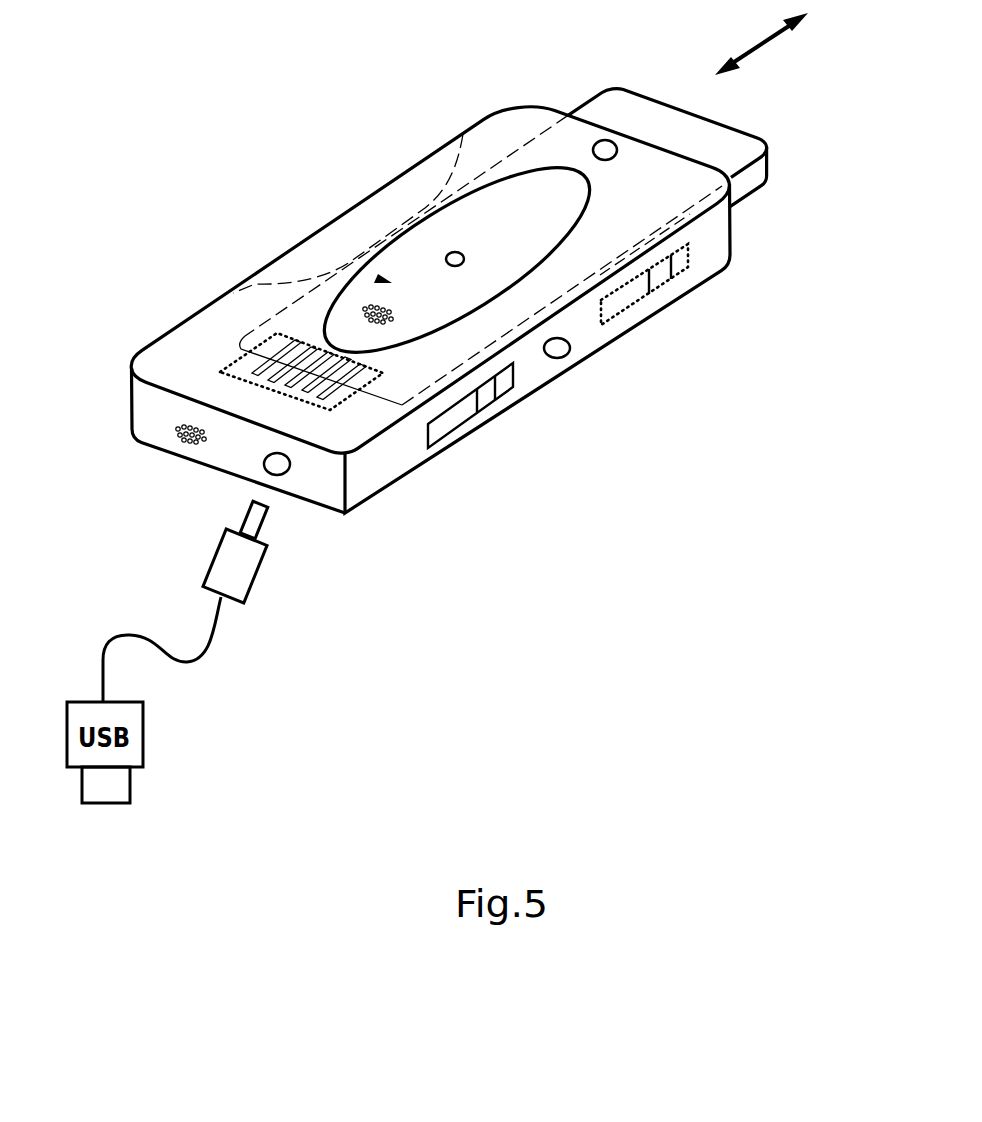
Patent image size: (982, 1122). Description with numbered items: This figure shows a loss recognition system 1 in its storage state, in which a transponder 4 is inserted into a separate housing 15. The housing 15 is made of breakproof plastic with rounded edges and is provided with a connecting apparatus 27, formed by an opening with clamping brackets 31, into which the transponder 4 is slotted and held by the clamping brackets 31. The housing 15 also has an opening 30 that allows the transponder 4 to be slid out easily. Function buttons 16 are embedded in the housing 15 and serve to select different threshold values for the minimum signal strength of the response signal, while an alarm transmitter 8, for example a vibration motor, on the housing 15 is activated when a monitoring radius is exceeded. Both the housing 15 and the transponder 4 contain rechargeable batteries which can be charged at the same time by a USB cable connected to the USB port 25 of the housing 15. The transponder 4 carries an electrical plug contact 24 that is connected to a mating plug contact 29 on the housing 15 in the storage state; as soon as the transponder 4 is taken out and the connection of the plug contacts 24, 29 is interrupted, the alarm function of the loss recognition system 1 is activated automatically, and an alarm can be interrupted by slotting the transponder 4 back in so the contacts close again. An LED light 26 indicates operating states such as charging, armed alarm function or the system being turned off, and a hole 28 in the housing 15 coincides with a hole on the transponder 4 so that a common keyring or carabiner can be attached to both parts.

The loss recognition system 1 is at (434, 335).
The transponder 4 is at (380, 280).
The alarm transmitter 8 is at (181, 446).
The housing 15 is at (505, 125).
The function button 16 is at (457, 423).
The plug contact 24 is at (252, 354).
The USB port 25 is at (282, 475).
The LED light 26 is at (565, 348).
The connecting apparatus 27 is at (557, 100).
The hole 28 is at (612, 150).
The mating plug contact 29 is at (333, 406).
The opening 30 is at (557, 218).
The clamping bracket 31 is at (445, 178).